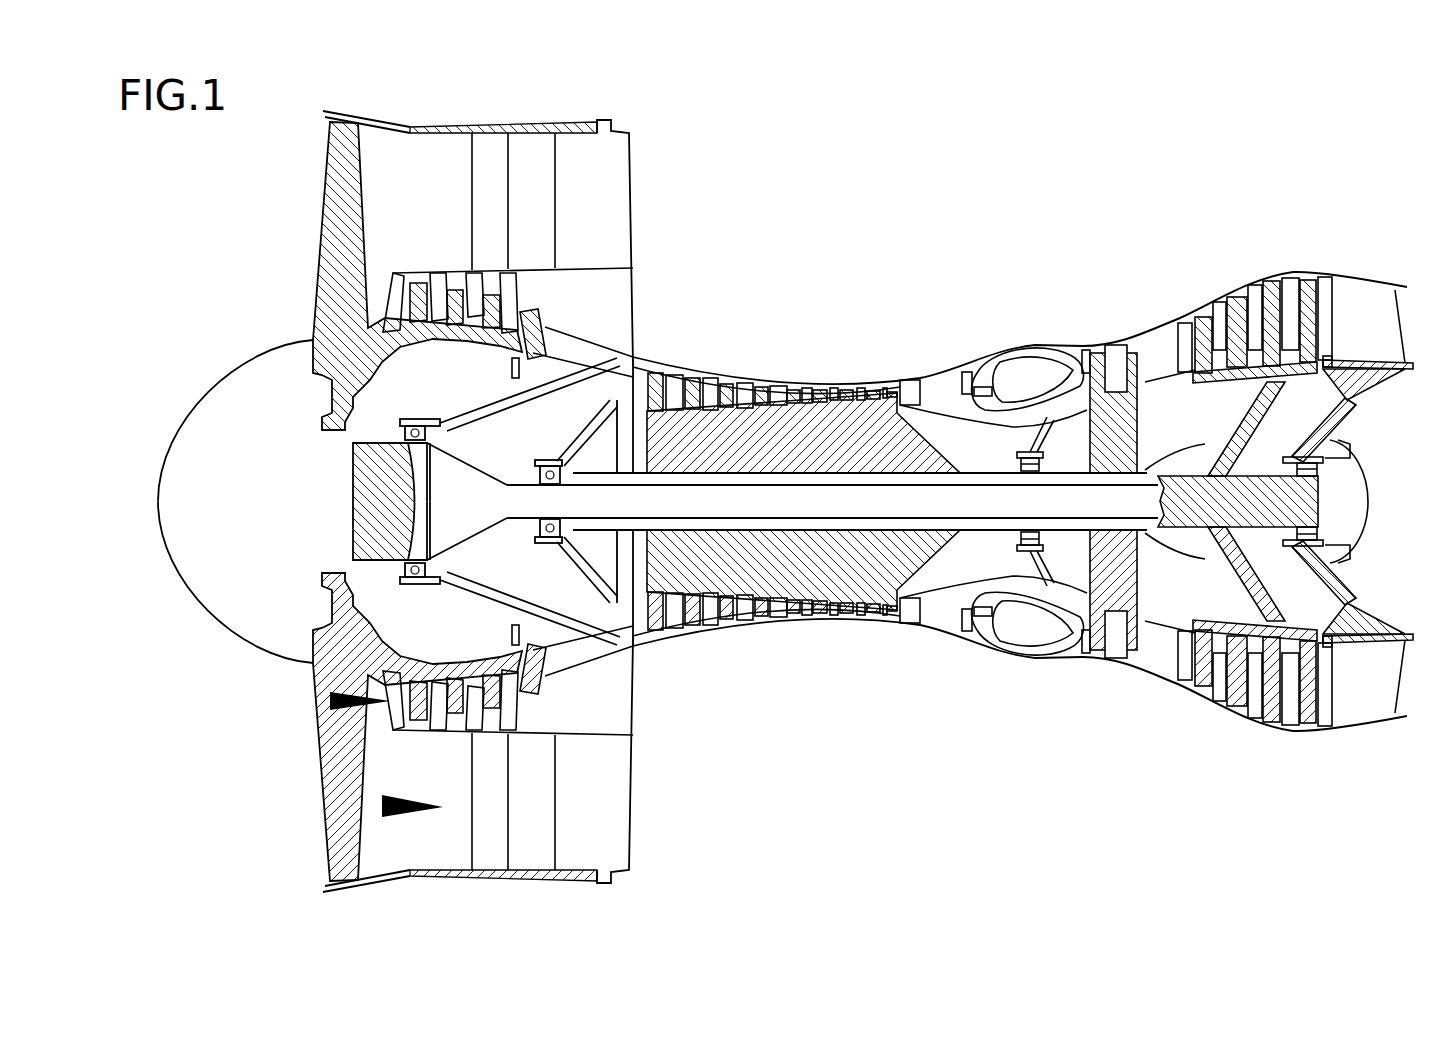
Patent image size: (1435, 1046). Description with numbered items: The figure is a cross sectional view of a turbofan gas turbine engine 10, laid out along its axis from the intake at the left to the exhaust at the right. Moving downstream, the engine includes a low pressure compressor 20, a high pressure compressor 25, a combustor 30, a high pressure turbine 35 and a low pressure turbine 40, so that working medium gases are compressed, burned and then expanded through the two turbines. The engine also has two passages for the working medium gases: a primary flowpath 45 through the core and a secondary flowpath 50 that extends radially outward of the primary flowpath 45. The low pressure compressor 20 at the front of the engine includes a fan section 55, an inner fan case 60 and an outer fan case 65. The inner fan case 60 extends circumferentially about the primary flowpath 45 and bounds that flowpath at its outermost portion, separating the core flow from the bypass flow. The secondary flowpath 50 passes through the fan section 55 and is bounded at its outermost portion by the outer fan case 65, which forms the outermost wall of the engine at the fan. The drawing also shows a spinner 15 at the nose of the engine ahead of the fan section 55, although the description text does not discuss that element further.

The turbofan gas turbine engine 10 is at (883, 140).
The nose cone 15 is at (230, 412).
The low pressure compressor 20 is at (548, 305).
The high pressure compressor 25 is at (794, 368).
The combustor 30 is at (1027, 313).
The high pressure turbine 35 is at (1126, 318).
The low pressure turbine 40 is at (1307, 248).
The primary flowpath 45 is at (332, 701).
The secondary flowpath 50 is at (384, 806).
The fan section 55 is at (300, 232).
The inner fan case 60 is at (447, 267).
The outer fan case 65 is at (443, 138).